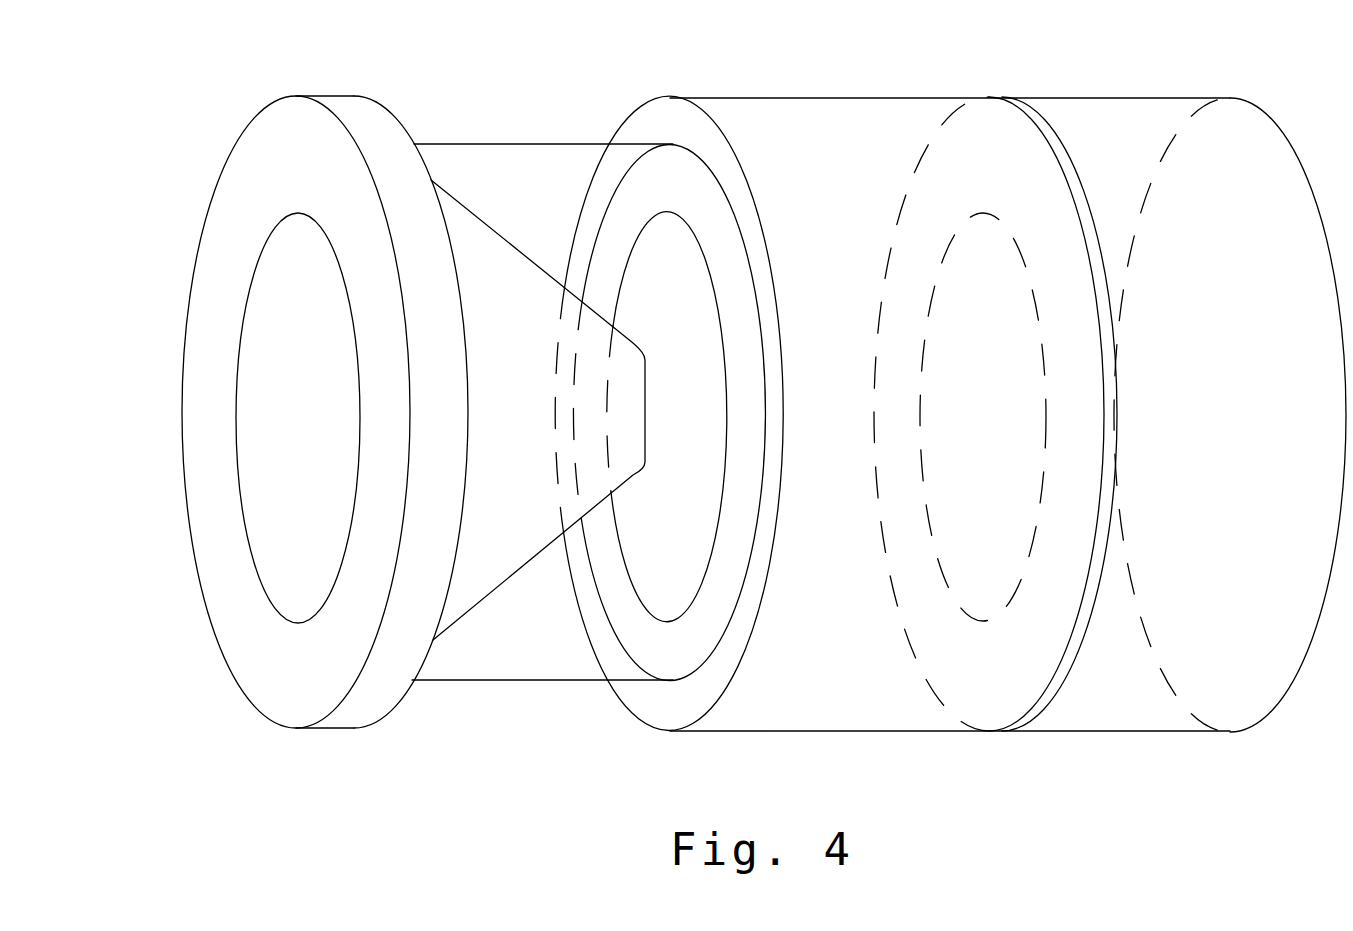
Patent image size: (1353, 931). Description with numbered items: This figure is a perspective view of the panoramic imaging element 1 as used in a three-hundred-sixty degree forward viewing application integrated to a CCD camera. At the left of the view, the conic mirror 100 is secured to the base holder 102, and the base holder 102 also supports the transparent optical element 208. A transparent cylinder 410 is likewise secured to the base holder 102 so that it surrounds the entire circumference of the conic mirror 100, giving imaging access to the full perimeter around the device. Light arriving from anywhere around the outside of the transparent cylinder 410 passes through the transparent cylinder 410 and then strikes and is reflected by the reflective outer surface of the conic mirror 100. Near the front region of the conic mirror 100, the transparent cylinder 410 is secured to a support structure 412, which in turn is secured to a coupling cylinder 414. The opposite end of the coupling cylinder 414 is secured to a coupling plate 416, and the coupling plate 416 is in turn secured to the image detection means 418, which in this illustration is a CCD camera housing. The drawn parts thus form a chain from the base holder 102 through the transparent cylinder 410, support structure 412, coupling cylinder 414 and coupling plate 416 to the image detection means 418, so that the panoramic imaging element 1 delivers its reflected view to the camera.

The panoramic imaging element 1 is at (522, 412).
The conic mirror 100 is at (505, 540).
The base holder 102 is at (363, 700).
The transparent optical element 208 is at (282, 283).
The transparent cylinder 410 is at (505, 160).
The support structure 412 is at (667, 118).
The coupling cylinder 414 is at (837, 133).
The coupling plate 416 is at (1042, 703).
The image detection means 418 is at (1137, 137).